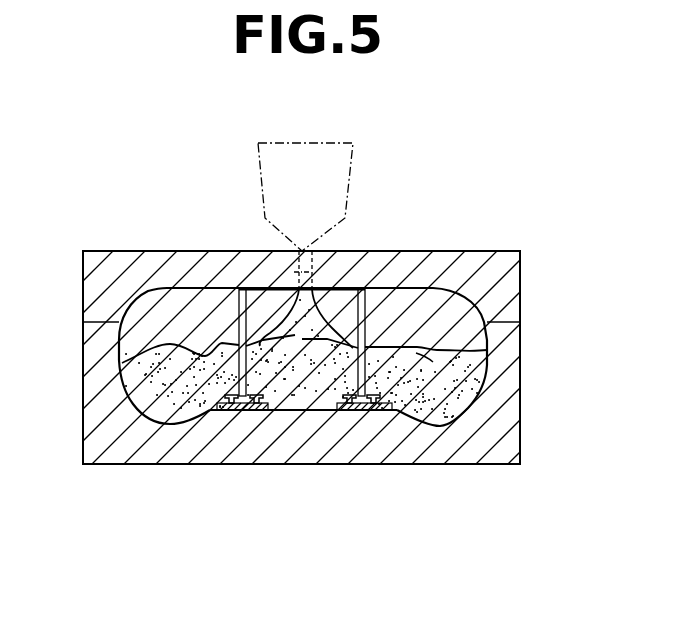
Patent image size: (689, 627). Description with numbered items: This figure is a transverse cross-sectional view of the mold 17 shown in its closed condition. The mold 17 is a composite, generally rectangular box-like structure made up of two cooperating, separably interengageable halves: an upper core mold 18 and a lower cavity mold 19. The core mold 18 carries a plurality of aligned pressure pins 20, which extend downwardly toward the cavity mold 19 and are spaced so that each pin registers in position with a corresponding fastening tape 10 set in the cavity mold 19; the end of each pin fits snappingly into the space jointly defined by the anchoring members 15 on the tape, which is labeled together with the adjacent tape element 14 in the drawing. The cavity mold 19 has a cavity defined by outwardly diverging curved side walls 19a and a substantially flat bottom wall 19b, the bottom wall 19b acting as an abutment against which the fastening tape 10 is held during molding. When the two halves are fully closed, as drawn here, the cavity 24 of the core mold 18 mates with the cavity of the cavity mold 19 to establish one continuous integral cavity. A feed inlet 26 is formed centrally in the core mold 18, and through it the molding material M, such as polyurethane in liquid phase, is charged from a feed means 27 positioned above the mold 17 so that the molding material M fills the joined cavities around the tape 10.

The fastening tape 10 is at (247, 411).
The semiconductor chip 14 is at (286, 456).
The anchoring member 15 is at (228, 399).
The mold 17 is at (344, 312).
The core mold 18 is at (512, 293).
The cavity mold 19 is at (508, 436).
The curved side wall 19a is at (136, 398).
The bottom wall 19b is at (309, 410).
The pressure pin 20 is at (237, 288).
The cavity 24 is at (180, 288).
The feed inlet 26 is at (300, 273).
The feed means 27 is at (343, 162).
The molding material M is at (473, 369).